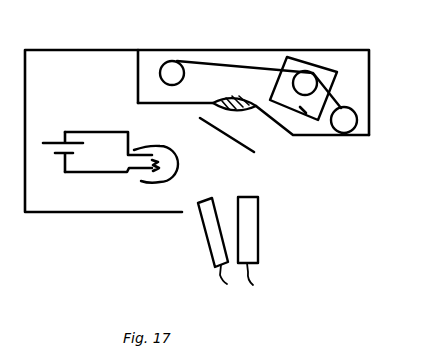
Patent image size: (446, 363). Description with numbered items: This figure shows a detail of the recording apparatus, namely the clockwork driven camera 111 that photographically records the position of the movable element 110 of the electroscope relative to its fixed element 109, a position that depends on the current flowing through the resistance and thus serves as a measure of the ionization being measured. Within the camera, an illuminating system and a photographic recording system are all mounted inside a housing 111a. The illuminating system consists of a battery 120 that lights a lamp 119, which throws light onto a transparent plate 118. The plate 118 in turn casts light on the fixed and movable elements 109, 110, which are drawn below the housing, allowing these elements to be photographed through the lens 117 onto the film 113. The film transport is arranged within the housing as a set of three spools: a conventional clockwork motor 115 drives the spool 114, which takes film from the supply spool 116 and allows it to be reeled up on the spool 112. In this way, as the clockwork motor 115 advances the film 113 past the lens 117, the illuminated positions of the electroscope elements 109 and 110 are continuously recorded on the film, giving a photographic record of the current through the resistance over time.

The fixed element 109 is at (258, 228).
The movable element 110 is at (200, 240).
The clockwork driven camera 111 is at (310, 43).
The housing 111a is at (137, 50).
The spool 112 is at (174, 61).
The film 113 is at (242, 64).
The spool 114 is at (317, 66).
The clockwork motor 115 is at (294, 137).
The spool 116 is at (357, 121).
The lens 117 is at (236, 99).
The transparent plate 118 is at (225, 131).
The lamp 119 is at (147, 179).
The battery 120 is at (51, 139).